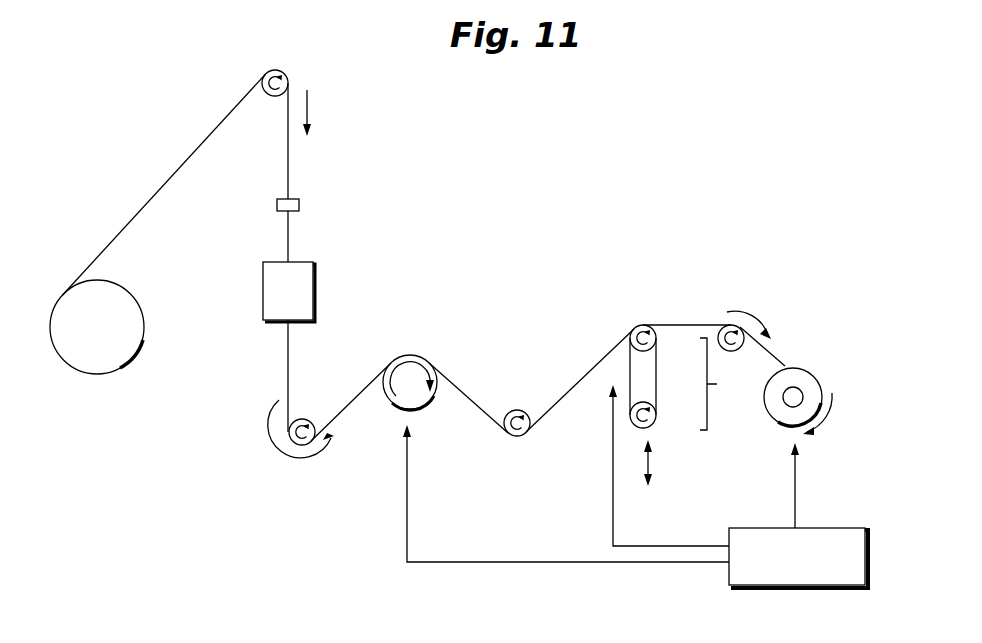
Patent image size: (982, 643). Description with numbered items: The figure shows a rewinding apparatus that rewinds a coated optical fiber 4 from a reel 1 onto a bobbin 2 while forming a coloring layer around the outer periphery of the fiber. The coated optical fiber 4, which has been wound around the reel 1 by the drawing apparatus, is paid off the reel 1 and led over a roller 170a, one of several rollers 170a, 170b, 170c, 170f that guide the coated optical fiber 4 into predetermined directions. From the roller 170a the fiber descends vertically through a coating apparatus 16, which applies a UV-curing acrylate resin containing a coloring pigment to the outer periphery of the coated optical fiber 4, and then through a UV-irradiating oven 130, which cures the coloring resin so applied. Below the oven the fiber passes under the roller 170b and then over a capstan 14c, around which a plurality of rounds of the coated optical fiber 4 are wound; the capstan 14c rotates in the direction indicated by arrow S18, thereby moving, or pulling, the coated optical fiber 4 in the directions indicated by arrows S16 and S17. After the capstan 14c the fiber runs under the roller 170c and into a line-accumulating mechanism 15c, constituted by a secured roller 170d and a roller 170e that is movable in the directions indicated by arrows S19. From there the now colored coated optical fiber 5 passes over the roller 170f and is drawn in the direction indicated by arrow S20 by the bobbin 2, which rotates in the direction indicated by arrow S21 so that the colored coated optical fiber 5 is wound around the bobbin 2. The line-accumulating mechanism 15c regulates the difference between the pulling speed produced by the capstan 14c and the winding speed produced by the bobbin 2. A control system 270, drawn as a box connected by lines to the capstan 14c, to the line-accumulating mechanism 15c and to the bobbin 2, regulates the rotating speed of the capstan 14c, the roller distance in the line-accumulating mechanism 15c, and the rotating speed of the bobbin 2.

The reel 1 is at (143, 332).
The bobbin 2 is at (810, 382).
The coated optical fiber 4 is at (165, 182).
The colored coated optical fiber 5 is at (672, 323).
The coating apparatus 16 is at (299, 203).
The UV-irradiating oven 130 is at (313, 292).
The roller 170a is at (280, 71).
The roller 170b is at (310, 421).
The roller 170c is at (517, 410).
The secured roller 170d is at (657, 337).
The movable roller 170e is at (680, 413).
The roller 170f is at (727, 325).
The capstan 14c is at (392, 404).
The line-accumulating mechanism 15c is at (729, 384).
The control system 270 is at (822, 589).
The arrow S16 is at (309, 115).
The arrow S17 is at (300, 460).
The arrow S18 is at (411, 355).
The arrows S19 is at (650, 462).
The arrow S20 is at (752, 318).
The arrow S21 is at (828, 420).